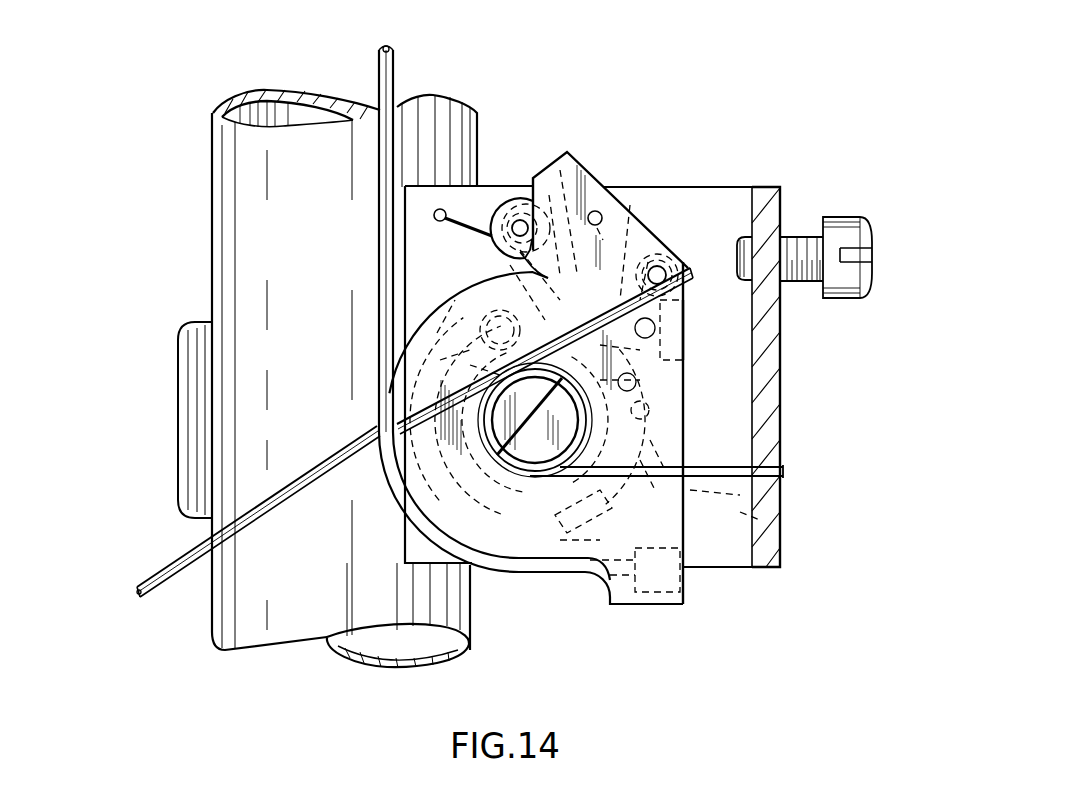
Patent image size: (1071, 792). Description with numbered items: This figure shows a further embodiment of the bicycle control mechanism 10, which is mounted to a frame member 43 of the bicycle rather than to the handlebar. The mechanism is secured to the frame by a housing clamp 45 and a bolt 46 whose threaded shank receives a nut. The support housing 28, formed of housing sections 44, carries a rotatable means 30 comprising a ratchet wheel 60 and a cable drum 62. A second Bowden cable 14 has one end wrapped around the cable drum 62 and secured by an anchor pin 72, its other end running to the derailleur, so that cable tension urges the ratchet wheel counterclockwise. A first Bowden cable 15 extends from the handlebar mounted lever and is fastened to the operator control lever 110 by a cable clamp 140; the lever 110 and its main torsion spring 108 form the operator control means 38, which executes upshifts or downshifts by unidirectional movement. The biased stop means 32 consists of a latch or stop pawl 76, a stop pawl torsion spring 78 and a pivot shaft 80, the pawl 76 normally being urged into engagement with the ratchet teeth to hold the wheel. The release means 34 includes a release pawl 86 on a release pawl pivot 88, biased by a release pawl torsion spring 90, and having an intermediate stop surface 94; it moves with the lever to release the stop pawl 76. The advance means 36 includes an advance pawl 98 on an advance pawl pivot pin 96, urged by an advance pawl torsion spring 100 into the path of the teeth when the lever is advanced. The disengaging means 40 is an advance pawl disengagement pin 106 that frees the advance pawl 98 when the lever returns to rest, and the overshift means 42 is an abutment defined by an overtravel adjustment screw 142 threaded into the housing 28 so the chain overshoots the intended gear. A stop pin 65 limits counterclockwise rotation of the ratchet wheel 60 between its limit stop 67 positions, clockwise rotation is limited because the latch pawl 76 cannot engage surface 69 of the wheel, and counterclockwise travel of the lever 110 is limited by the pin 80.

The control mechanism 10 is at (707, 646).
The cable 14 is at (160, 572).
The first Bowden cable 15 is at (398, 63).
The support housing 28 is at (785, 202).
The rotatable means 30 is at (670, 422).
The biased stop means 32 is at (530, 172).
The release means 34 is at (428, 345).
The advance means 36 is at (694, 200).
The operator control means 38 is at (685, 543).
The disengaging means 40 is at (692, 332).
The overshift means 42 is at (733, 240).
The frame member 43 is at (212, 206).
The housing section 44 is at (784, 468).
The housing clamp 45 is at (178, 352).
The bolt 46 is at (492, 470).
The ratchet wheel 60 is at (632, 435).
The cable drum 62 is at (518, 490).
The stop pin 65 is at (610, 377).
The limit stop 67 is at (750, 515).
The surface of the ratchet wheel 69 is at (483, 277).
The anchor pin 72 is at (568, 490).
The stop pawl 76 is at (503, 200).
The stop pawl torsion spring 78 is at (443, 207).
The pivot shaft 80 is at (520, 222).
The release pawl 86 is at (480, 372).
The release pawl pivot 88 is at (453, 280).
The release pawl torsion spring 90 is at (480, 312).
The intermediate stop surface 94 is at (483, 280).
The advance pawl pivot pin 96 is at (665, 265).
The advance pawl 98 is at (648, 262).
The advance pawl torsion spring 100 is at (632, 200).
The advance pawl disengagement pin 106 is at (610, 347).
The main torsion spring 108 is at (645, 490).
The operator control lever 110 is at (650, 607).
The cable clamp 140 is at (685, 582).
The overtravel adjustment screw 142 is at (873, 240).